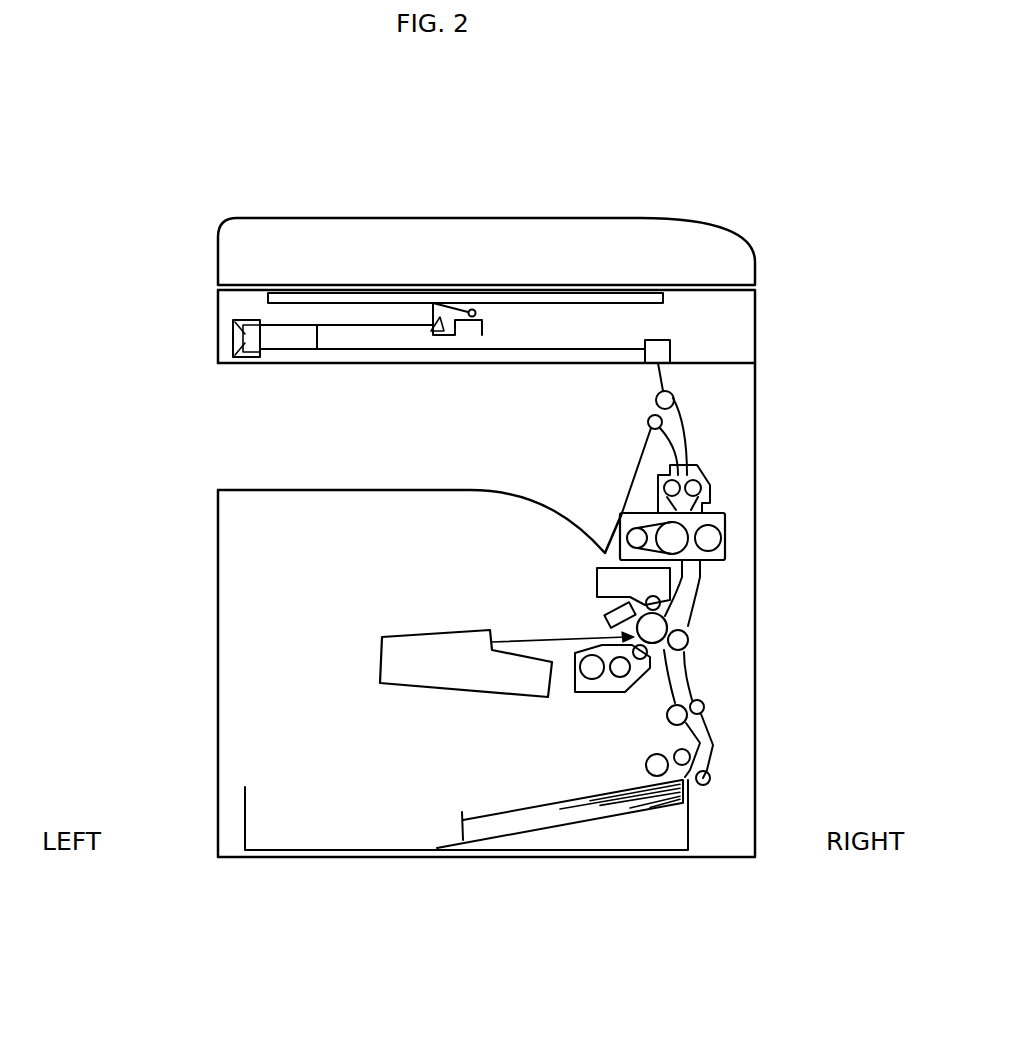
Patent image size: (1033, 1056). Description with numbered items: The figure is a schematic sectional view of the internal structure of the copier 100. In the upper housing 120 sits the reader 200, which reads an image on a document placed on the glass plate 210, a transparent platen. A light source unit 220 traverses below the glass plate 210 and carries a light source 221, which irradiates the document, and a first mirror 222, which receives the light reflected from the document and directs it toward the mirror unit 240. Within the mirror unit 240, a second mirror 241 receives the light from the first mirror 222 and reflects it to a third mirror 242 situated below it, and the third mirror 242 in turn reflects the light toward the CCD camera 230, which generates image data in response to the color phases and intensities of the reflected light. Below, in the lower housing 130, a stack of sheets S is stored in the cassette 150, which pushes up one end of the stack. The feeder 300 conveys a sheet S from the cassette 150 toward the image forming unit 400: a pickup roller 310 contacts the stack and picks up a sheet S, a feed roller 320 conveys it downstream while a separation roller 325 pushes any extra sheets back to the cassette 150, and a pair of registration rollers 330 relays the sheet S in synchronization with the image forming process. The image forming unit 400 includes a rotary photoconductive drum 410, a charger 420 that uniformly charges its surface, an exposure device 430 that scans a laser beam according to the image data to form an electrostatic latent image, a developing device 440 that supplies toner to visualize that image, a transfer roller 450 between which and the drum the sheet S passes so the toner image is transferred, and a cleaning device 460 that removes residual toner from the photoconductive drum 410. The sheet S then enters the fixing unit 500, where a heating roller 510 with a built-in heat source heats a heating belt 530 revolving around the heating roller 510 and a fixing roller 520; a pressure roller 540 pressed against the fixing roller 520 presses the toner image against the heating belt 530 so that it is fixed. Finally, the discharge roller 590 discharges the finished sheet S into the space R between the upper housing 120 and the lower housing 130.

The copier 100 is at (745, 160).
The upper housing 120 is at (215, 303).
The lower housing 130 is at (218, 623).
The cassette 150 is at (245, 807).
The reader 200 is at (515, 325).
The glass plate 210 is at (353, 293).
The light source unit 220 is at (499, 320).
The light source 221 is at (470, 308).
The first mirror 222 is at (440, 332).
The CCD camera 230 is at (672, 345).
The mirror unit 240 is at (253, 362).
The second mirror 241 is at (233, 323).
The third mirror 242 is at (235, 348).
The feeder 300 is at (730, 712).
The pickup roller 310 is at (649, 762).
The feed roller 320 is at (676, 752).
The separation roller 325 is at (710, 780).
The pair of registration rollers 330 is at (700, 706).
The image forming unit 400 is at (400, 612).
The photoconductive drum 410 is at (690, 617).
The charger 420 is at (636, 620).
The exposure device 430 is at (382, 656).
The developing device 440 is at (597, 693).
The transfer roller 450 is at (688, 643).
The cleaning device 460 is at (603, 567).
The fixing unit 500 is at (706, 579).
The heating roller 510 is at (622, 513).
The fixing roller 520 is at (680, 530).
The heating belt 530 is at (638, 478).
The pressure roller 540 is at (712, 538).
The discharge roller 590 is at (673, 393).
The space R is at (233, 455).
The sheet S is at (582, 793).